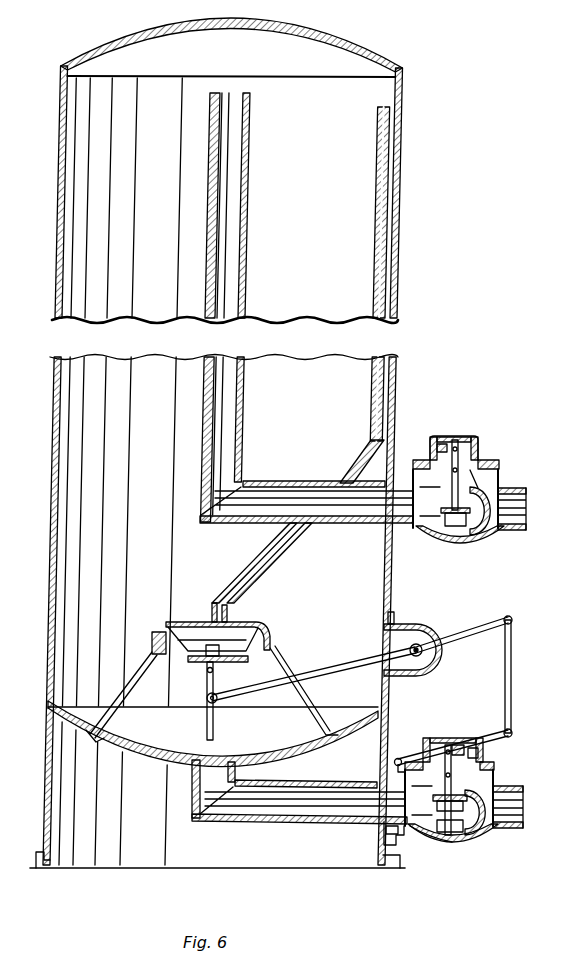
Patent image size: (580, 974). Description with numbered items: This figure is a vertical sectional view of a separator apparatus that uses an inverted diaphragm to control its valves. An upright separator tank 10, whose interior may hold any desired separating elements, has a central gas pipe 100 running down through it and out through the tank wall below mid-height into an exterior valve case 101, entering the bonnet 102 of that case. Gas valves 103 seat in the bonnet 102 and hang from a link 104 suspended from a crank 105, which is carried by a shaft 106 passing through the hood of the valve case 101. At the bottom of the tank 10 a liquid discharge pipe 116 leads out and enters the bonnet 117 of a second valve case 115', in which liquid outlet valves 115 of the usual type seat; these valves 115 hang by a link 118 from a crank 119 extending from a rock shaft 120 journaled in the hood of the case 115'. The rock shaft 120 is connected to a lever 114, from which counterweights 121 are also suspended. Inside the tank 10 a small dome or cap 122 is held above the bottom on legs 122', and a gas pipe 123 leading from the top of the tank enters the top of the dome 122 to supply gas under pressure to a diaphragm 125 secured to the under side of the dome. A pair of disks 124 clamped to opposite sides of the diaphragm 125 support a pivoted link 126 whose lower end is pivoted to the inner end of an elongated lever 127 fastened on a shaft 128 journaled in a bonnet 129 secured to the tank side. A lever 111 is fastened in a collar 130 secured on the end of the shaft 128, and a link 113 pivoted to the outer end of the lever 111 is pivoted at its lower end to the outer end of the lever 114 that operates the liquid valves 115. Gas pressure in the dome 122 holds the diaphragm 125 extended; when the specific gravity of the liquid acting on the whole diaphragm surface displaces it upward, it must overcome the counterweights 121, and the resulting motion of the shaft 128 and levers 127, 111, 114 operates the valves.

The separator tank 10 is at (406, 159).
The central gas pipe 100 is at (248, 196).
The valve case 101 is at (448, 543).
The bonnet 102 is at (498, 494).
The gas valves 103 is at (480, 479).
The link 104 is at (474, 444).
The crank 105 is at (453, 455).
The shaft 106 is at (437, 456).
The lever 111 is at (490, 622).
The link 113 is at (511, 651).
The lever 114 is at (484, 726).
The liquid outlet valves 115 is at (462, 810).
The valve case 115' is at (450, 855).
The liquid discharge pipe 116 is at (300, 812).
The bonnet 117 is at (500, 792).
The link 118 is at (456, 775).
The crank 119 is at (461, 745).
The rock shaft 120 is at (480, 752).
The counterweights 121 is at (393, 845).
The dome 122 is at (211, 624).
The legs 122' is at (209, 694).
The gas pipe 123 is at (292, 543).
The disks 124 is at (205, 673).
The diaphragm 125 is at (186, 655).
The pivoted link 126 is at (217, 683).
The elongated lever 127 is at (346, 662).
The shaft 128 is at (432, 638).
The bonnet 129 is at (442, 661).
The collar 130 is at (410, 642).